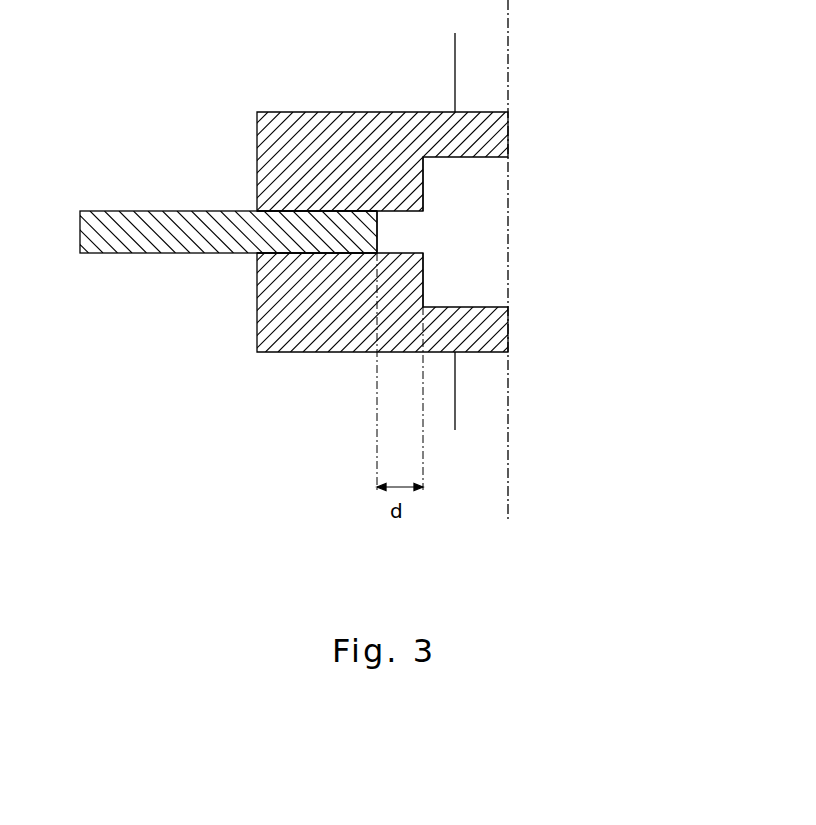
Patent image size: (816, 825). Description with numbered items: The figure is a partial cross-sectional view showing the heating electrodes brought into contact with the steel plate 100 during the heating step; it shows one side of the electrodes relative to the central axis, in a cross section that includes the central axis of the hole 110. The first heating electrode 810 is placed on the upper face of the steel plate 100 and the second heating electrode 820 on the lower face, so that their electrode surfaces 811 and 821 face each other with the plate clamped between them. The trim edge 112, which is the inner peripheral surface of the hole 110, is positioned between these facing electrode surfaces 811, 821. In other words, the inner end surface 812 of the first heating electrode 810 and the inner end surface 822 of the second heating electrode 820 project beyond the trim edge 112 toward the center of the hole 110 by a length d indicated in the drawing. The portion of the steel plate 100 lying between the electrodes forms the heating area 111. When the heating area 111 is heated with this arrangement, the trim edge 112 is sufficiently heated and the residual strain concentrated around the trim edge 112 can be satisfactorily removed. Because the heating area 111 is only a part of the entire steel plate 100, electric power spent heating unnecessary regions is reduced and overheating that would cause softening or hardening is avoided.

The steel plate 100 is at (148, 220).
The hole 110 is at (485, 260).
The heating area 111 is at (290, 237).
The trim edge 112 is at (378, 223).
The first heating electrode 810 is at (310, 112).
The electrode surface 811 is at (285, 208).
The inner end surface 812 is at (423, 181).
The second heating electrode 820 is at (310, 352).
The electrode surface 821 is at (287, 257).
The inner end surface 822 is at (423, 282).